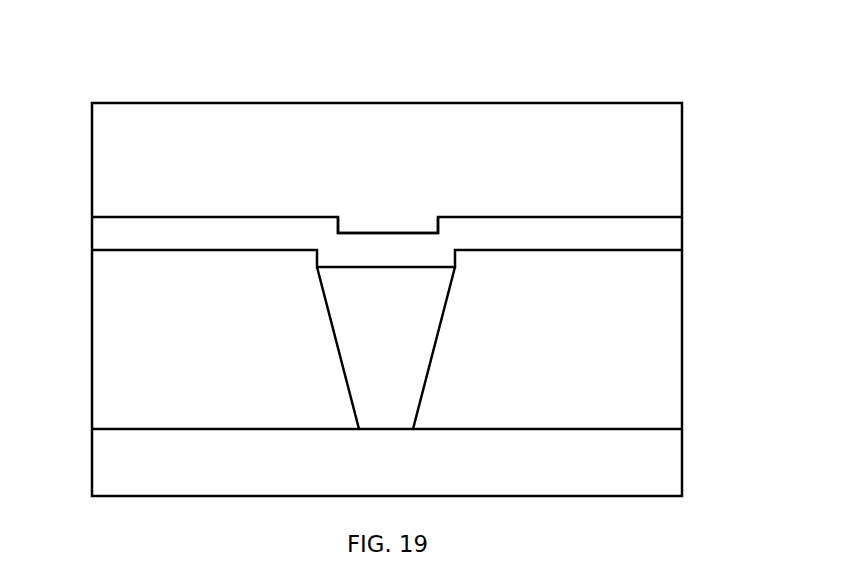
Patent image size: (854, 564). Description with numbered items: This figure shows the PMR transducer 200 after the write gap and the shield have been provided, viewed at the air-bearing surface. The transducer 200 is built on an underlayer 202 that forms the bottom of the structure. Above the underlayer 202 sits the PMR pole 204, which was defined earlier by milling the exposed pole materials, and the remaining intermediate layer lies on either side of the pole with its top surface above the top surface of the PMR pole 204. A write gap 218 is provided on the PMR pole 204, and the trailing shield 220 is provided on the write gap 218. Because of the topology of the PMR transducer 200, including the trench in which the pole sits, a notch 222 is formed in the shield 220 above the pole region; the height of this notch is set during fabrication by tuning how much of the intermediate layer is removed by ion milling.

The PMR transducer 200 is at (409, 32).
The underlayer 202 is at (682, 465).
The PMR pole 204 is at (447, 298).
The write gap 218 is at (92, 238).
The trailing shield 220 is at (92, 165).
The notch 222 is at (456, 226).